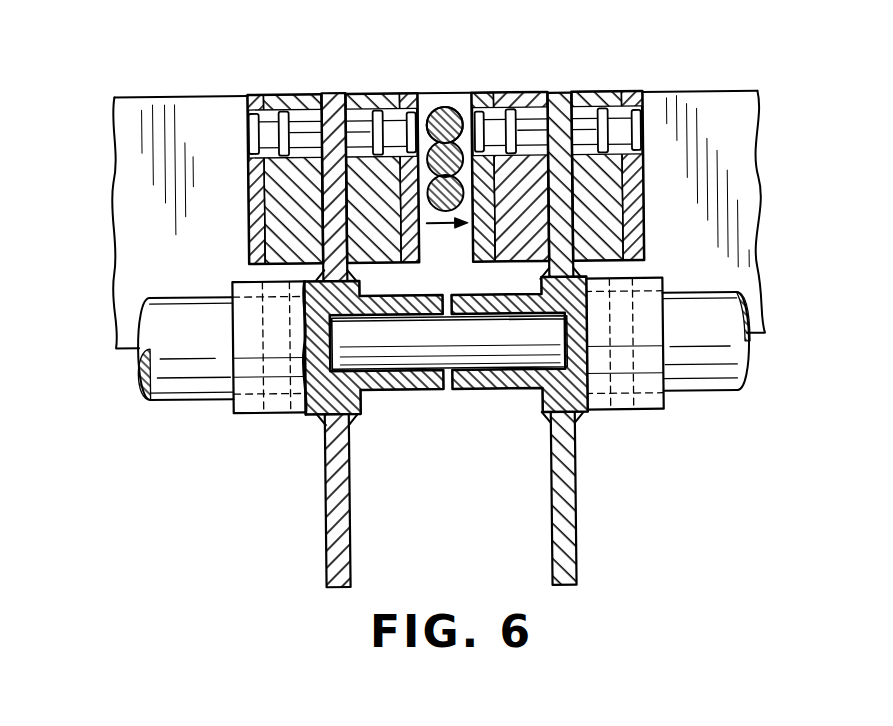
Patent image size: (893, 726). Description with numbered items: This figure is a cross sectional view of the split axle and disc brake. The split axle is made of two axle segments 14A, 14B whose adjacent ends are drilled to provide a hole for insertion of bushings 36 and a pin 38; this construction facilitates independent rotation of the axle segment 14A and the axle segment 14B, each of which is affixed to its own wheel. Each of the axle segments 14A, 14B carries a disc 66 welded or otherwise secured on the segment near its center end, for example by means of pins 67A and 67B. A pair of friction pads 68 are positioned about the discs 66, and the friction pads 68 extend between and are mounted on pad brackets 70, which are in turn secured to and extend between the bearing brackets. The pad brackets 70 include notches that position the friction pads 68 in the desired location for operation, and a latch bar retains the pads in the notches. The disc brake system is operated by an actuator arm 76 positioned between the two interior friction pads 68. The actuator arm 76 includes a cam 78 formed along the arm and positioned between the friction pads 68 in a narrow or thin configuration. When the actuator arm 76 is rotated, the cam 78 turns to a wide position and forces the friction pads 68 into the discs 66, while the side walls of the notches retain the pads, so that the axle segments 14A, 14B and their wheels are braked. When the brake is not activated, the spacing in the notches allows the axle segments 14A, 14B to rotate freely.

The pad bracket 70 is at (134, 210).
The friction pad 68 is at (366, 92).
The cam 78 is at (439, 112).
The actuator arm 76 is at (460, 110).
The disc 66 is at (338, 512).
The bushing 36 is at (397, 382).
The pin 38 is at (460, 358).
The axle segment 14B is at (178, 395).
The axle segment 14A is at (722, 395).
The pin 67B is at (273, 408).
The pin 67A is at (624, 408).